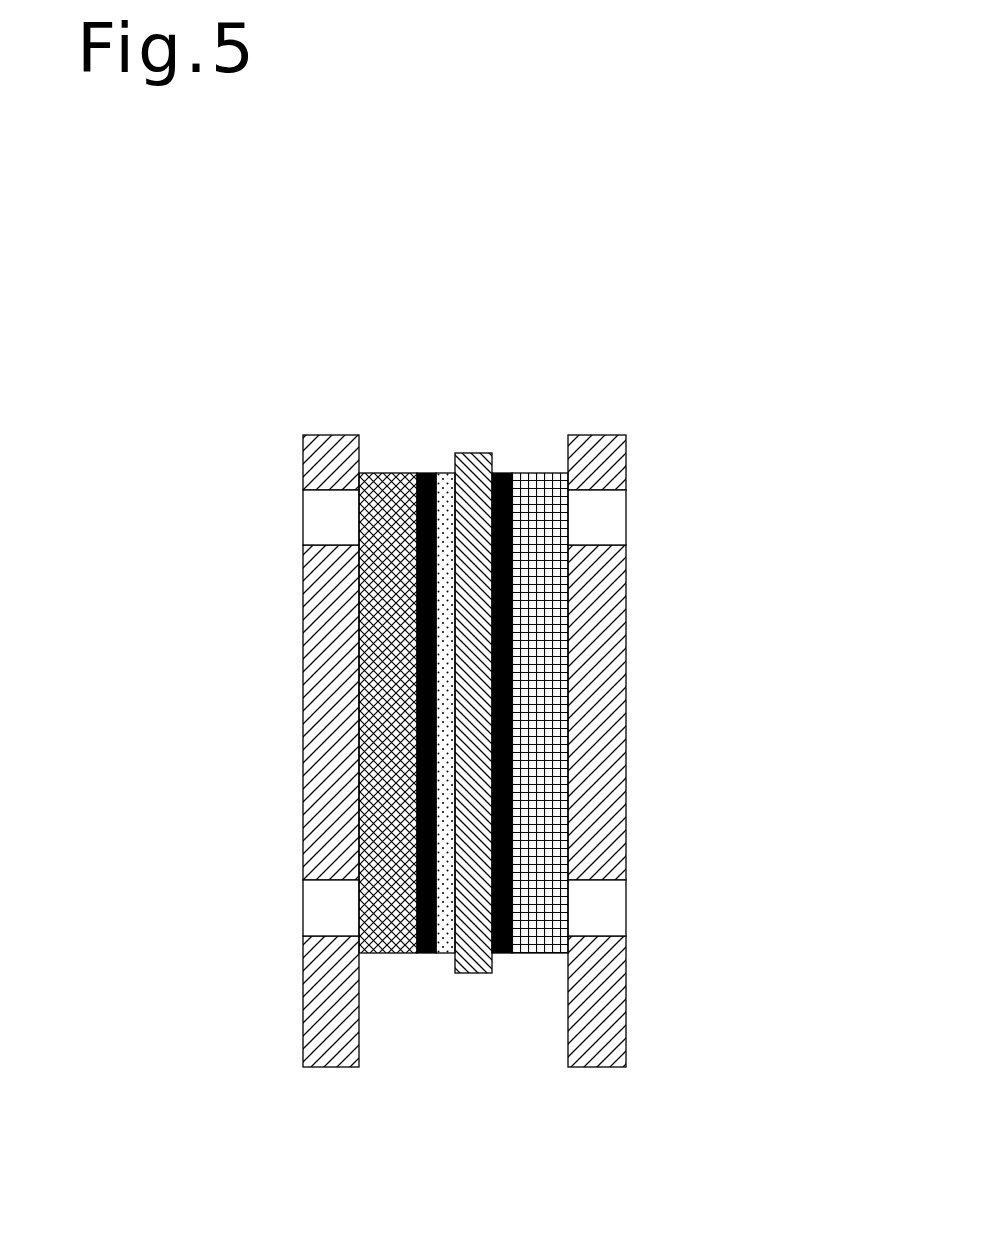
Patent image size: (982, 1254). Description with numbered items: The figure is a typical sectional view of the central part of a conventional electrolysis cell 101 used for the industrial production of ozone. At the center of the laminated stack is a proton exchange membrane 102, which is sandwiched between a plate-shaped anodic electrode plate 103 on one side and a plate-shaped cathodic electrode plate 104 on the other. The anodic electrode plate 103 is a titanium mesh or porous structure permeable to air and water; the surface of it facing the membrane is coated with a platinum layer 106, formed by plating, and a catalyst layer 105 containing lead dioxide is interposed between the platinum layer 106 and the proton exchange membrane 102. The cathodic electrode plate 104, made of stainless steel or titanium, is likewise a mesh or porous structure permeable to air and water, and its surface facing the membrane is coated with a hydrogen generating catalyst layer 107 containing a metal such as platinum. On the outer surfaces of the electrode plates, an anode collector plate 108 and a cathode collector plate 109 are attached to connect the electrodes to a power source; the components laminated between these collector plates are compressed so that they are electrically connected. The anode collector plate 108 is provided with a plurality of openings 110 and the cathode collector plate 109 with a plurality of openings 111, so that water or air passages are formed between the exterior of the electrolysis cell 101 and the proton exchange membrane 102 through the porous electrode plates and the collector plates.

The electrolysis cell 101 is at (248, 274).
The proton exchange membrane 102 is at (475, 453).
The anodic electrode plate 103 is at (388, 473).
The cathodic electrode plate 104 is at (538, 473).
The catalyst layer 105 is at (447, 955).
The platinum layer 106 is at (427, 955).
The hydrogen generating catalyst layer 107 is at (502, 955).
The anode collector plate 108 is at (303, 642).
The cathode collector plate 109 is at (617, 630).
The openings 110 is at (318, 518).
The openings 111 is at (617, 523).